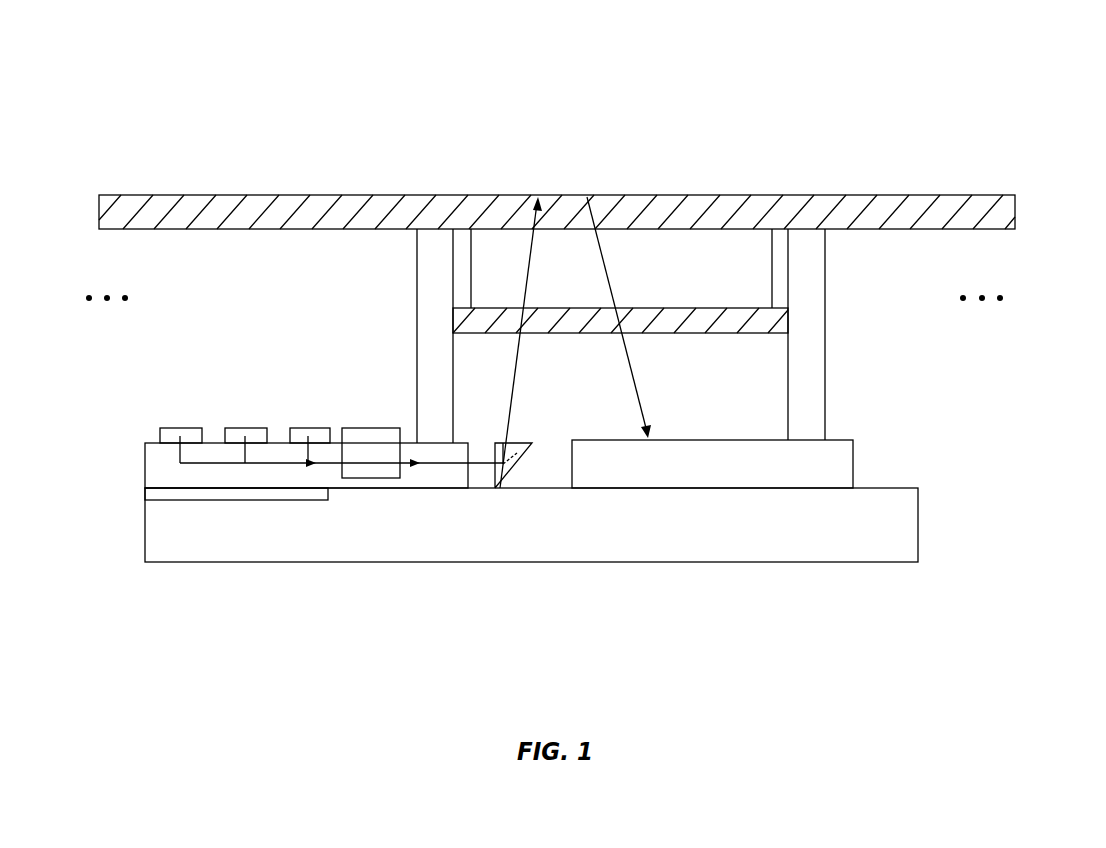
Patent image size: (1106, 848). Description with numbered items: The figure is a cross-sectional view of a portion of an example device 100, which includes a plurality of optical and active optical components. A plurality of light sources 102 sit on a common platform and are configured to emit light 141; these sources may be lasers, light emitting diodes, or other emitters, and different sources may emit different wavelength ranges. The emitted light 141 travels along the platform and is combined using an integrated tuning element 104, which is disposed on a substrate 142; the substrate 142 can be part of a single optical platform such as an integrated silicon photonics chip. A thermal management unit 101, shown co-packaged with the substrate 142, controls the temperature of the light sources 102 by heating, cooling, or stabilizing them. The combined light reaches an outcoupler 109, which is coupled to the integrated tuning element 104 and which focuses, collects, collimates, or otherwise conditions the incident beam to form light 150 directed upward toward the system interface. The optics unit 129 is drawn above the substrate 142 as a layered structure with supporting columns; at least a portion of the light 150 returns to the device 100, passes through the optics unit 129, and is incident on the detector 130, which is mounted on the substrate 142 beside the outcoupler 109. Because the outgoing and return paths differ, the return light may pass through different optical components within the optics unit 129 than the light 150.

The device 100 is at (174, 116).
The thermal management unit 101 is at (172, 495).
The light source 102 is at (333, 400).
The integrated tuning element 104 is at (342, 482).
The outcoupler 109 is at (500, 490).
The optics unit 129 is at (772, 272).
The detector 130 is at (700, 438).
The light 141 is at (448, 467).
The substrate 142 is at (903, 527).
The light 150 is at (517, 402).